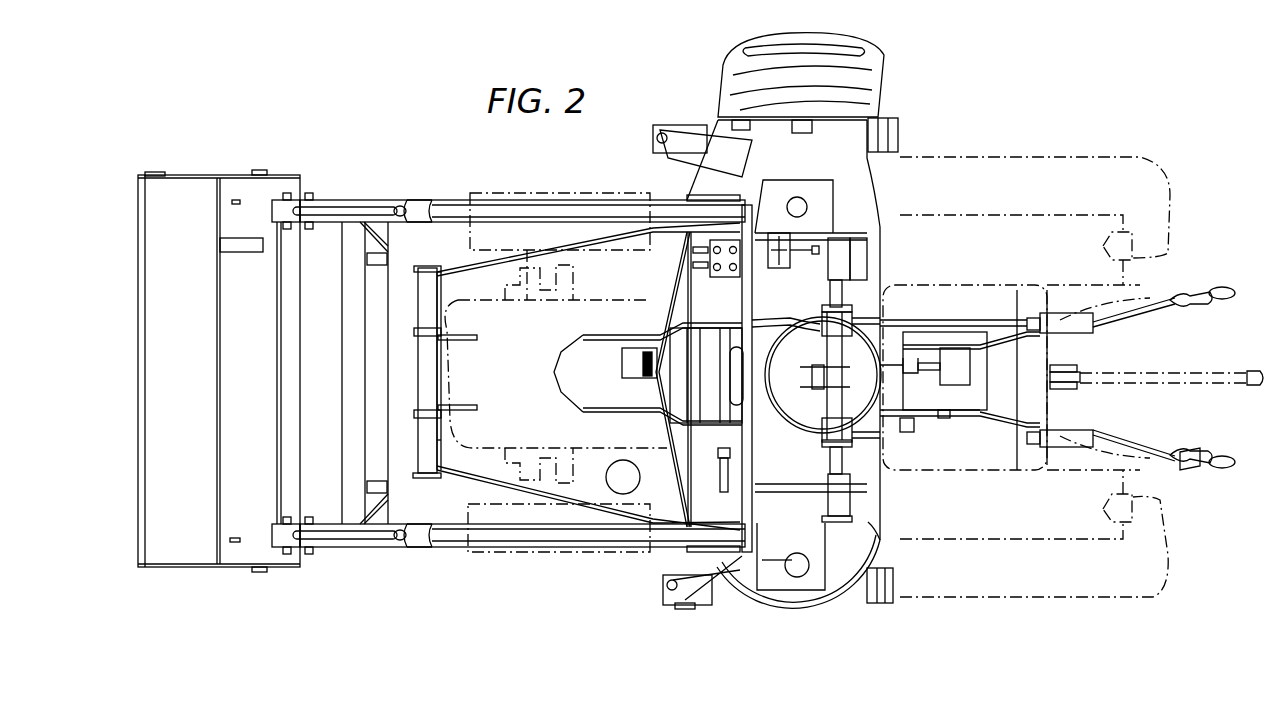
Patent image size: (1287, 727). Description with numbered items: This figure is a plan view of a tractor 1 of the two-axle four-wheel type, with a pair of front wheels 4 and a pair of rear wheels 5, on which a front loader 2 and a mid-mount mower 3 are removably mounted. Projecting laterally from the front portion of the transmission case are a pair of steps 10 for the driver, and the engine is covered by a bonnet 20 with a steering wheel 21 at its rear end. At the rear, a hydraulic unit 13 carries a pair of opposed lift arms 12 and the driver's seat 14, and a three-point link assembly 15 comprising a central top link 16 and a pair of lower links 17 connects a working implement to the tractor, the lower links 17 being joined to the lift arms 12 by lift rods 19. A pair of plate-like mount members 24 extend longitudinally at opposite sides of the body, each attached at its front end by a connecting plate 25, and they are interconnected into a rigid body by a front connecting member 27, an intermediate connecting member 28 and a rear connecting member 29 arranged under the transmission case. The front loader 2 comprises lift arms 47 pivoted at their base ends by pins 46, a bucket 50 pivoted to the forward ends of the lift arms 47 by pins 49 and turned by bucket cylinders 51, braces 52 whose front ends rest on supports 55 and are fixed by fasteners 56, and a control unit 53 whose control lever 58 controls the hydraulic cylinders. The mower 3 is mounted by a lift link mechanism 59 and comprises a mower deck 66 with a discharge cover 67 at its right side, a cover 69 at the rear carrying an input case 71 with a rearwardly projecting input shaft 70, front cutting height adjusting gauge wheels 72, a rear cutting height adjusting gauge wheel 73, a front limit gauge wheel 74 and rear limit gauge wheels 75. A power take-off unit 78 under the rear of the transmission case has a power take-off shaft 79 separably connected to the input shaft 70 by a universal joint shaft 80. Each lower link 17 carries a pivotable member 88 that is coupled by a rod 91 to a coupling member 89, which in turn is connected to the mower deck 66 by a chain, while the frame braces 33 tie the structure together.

The tractor 1 is at (473, 290).
The front loader 2 is at (347, 550).
The mower 3 is at (812, 614).
The front wheels 4 is at (556, 193).
The rear wheels 5 is at (1080, 157).
The steps 10 is at (816, 196).
The lift arms 12 is at (1078, 368).
The hydraulic unit 13 is at (1080, 385).
The driver's seat 14 is at (1015, 290).
The three-point link assembly 15 is at (1192, 474).
The top link 16 is at (1195, 373).
The lower links 17 is at (1206, 299).
The lift rods 19 is at (1140, 320).
The bonnet 20 is at (473, 483).
The steering wheel 21 is at (905, 440).
The mount members 24 is at (962, 372).
The connecting plate 25 is at (570, 375).
The front connecting member 27 is at (705, 355).
The intermediate connecting member 28 is at (872, 335).
The rear connecting member 29 is at (975, 330).
The frame brace 33 is at (690, 281).
The pins 46 is at (742, 191).
The lift arms 47 is at (610, 208).
The pins 49 is at (312, 194).
The bucket 50 is at (152, 476).
The bucket cylinders 51 is at (404, 200).
The braces 52 is at (565, 296).
The control unit 53 is at (775, 262).
The supports 55 is at (440, 393).
The fasteners 56 is at (422, 410).
The control lever 58 is at (830, 236).
The lift link mechanism 59 is at (837, 523).
The mower deck 66 is at (872, 522).
The discharge cover 67 is at (870, 48).
The cover 69 is at (777, 575).
The input shaft 70 is at (786, 330).
The input case 71 is at (745, 430).
The front cutting height adjusting gauge wheels 72 is at (696, 124).
The rear cutting height adjusting gauge wheel 73 is at (943, 425).
The front limit gauge wheel 74 is at (622, 367).
The rear limit gauge wheels 75 is at (900, 136).
The power take-off unit 78 is at (985, 414).
The power take-off shaft 79 is at (945, 395).
The universal joint shaft 80 is at (905, 393).
The pivotable member 88 is at (1065, 313).
The coupling member 89 is at (860, 318).
The rod 91 is at (950, 318).